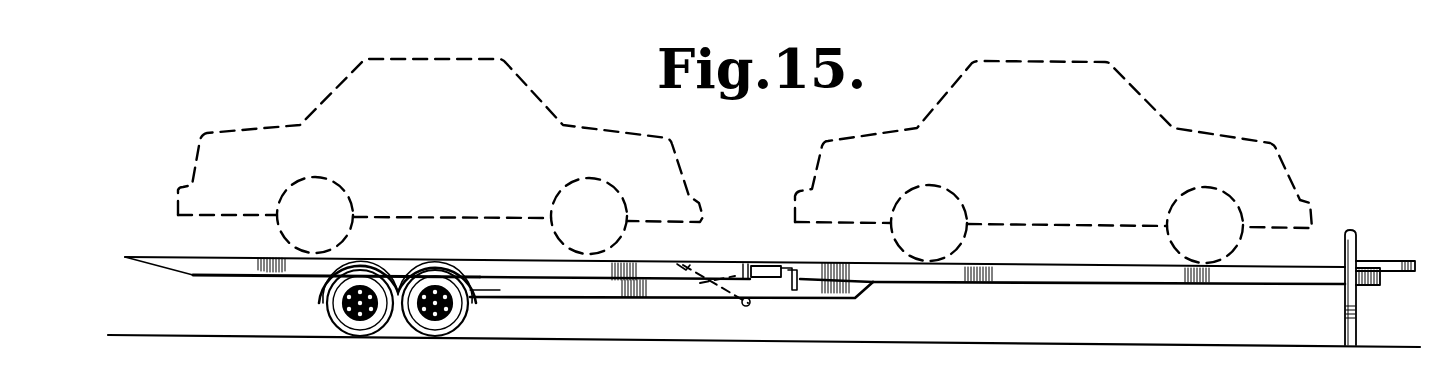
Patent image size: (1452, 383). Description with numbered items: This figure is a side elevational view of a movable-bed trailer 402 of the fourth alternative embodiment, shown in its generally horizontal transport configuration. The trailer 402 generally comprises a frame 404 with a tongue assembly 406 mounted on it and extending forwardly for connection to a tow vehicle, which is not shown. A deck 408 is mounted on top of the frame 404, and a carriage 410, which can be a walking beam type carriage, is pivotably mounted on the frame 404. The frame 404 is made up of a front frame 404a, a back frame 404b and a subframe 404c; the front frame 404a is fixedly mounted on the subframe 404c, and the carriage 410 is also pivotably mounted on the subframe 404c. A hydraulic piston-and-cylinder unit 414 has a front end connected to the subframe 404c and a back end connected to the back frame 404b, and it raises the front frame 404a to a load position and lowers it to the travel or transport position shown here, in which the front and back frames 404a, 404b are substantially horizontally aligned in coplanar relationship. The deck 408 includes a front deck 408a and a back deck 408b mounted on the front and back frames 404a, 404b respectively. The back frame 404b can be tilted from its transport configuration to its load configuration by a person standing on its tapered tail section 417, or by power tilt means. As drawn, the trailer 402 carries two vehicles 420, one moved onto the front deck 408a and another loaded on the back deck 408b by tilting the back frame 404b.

The movable-bed trailer 402 is at (1364, 222).
The frame 404 is at (1385, 288).
The front frame 404a is at (1040, 286).
The back frame 404b is at (500, 258).
The subframe 404c is at (568, 298).
The tongue assembly 406 is at (1431, 240).
The deck 408 is at (1100, 265).
The front deck 408a is at (860, 263).
The back deck 408b is at (248, 257).
The carriage 410 is at (315, 303).
The hydraulic piston-and-cylinder unit 414 is at (698, 301).
The tapered tail section 417 is at (124, 260).
The vehicle 420 is at (504, 60).